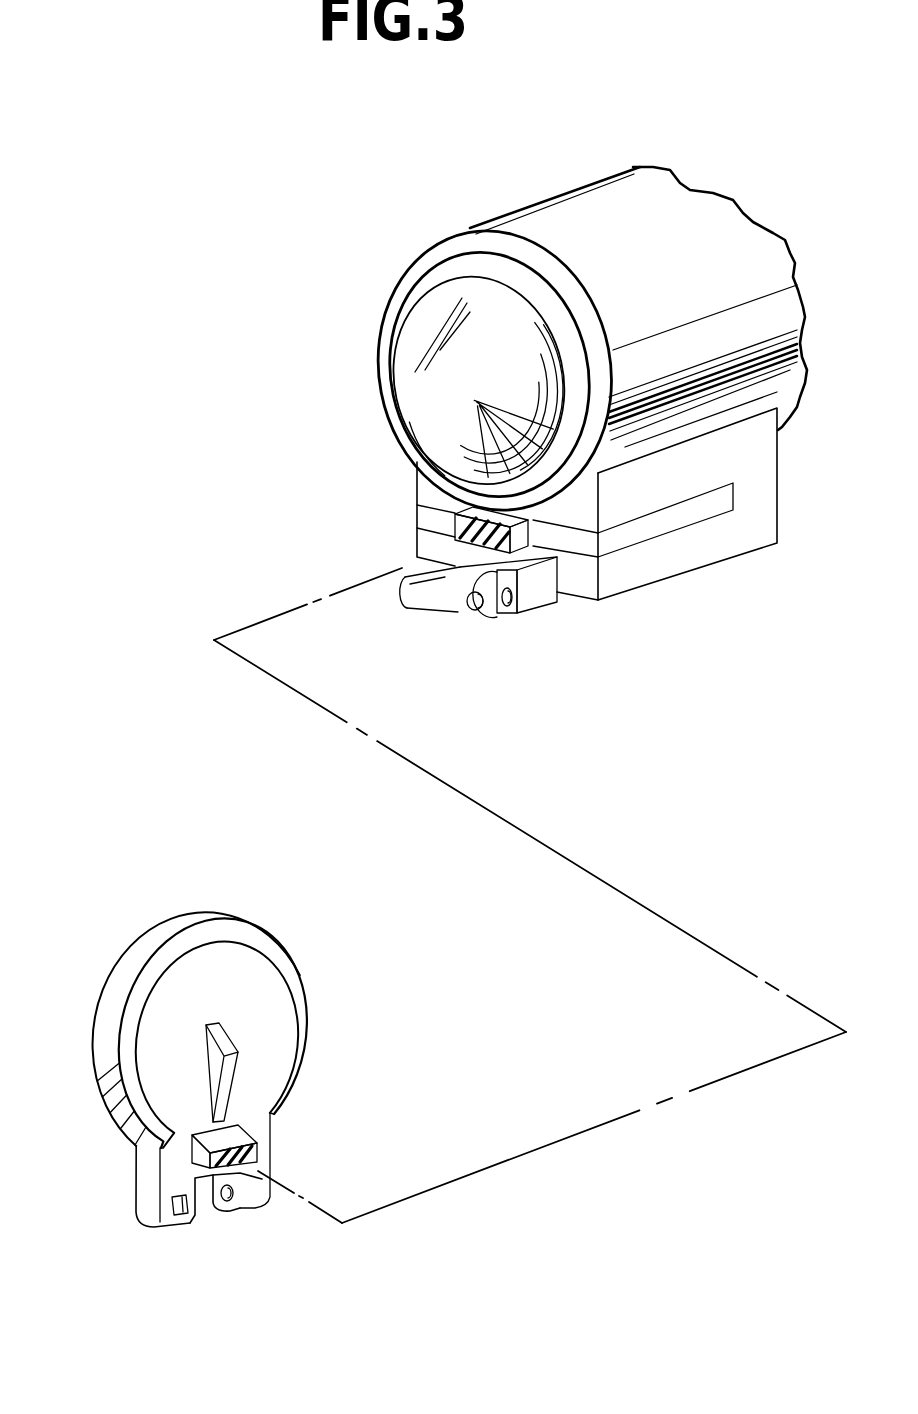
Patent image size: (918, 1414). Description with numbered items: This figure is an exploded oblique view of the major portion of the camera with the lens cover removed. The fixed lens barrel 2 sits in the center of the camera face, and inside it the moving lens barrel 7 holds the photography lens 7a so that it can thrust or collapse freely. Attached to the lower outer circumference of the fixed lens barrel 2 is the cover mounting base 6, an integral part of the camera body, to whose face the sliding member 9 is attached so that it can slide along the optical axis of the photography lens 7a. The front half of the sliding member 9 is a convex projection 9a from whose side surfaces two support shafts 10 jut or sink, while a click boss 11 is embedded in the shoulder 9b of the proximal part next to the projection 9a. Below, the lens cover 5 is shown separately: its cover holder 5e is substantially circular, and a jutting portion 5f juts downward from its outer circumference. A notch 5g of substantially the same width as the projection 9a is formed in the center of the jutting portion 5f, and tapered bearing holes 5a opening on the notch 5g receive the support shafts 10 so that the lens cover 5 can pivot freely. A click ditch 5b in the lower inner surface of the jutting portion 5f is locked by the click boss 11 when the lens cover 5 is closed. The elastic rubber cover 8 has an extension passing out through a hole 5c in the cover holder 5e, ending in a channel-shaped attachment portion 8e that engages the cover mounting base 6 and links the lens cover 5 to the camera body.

The fixed lens barrel 2 is at (563, 230).
The moving lens barrel 7 is at (487, 263).
The photography lens 7a is at (418, 383).
The cover mounting base 6 is at (742, 527).
The rubber cover 8 is at (305, 1017).
The attachment portion 8e is at (563, 537).
The sliding member 9 is at (540, 595).
The projection 9a is at (433, 596).
The shoulder 9b is at (527, 603).
The support shafts 10 is at (483, 610).
The click boss 11 is at (507, 610).
The lens cover 5 is at (122, 955).
The bearing holes 5a is at (222, 1213).
The click ditch 5b is at (176, 1226).
The hole 5c is at (238, 1126).
The cover holder 5e is at (157, 1063).
The jutting portion 5f is at (147, 1202).
The notch 5g is at (208, 1218).